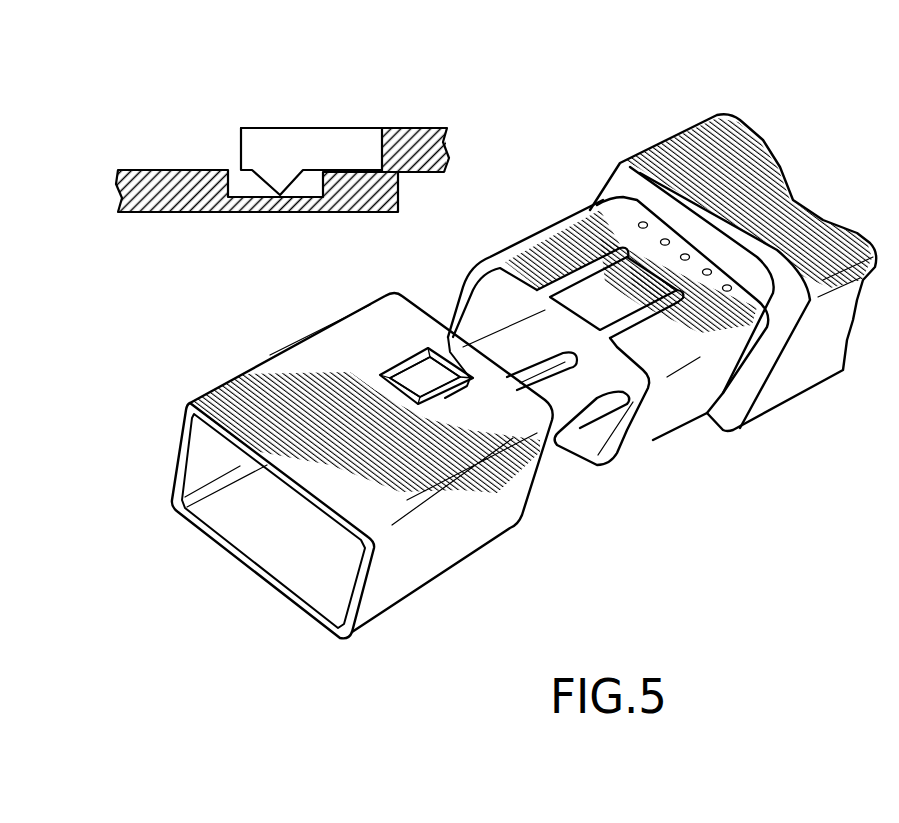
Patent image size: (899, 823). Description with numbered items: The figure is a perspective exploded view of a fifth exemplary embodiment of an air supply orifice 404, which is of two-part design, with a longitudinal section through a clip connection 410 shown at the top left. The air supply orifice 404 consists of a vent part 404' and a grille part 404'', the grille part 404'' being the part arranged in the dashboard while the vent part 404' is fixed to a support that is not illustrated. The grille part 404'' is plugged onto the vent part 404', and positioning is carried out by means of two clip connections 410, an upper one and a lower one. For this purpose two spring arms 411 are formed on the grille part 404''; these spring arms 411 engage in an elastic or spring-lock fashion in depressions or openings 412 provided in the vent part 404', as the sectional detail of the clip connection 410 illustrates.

The air supply orifice 404 is at (733, 339).
The vent part 404' is at (362, 456).
The grille part 404'' is at (645, 281).
The clip connection 410 is at (192, 113).
The spring arm 411 is at (583, 293).
The depression or opening 412 is at (423, 383).